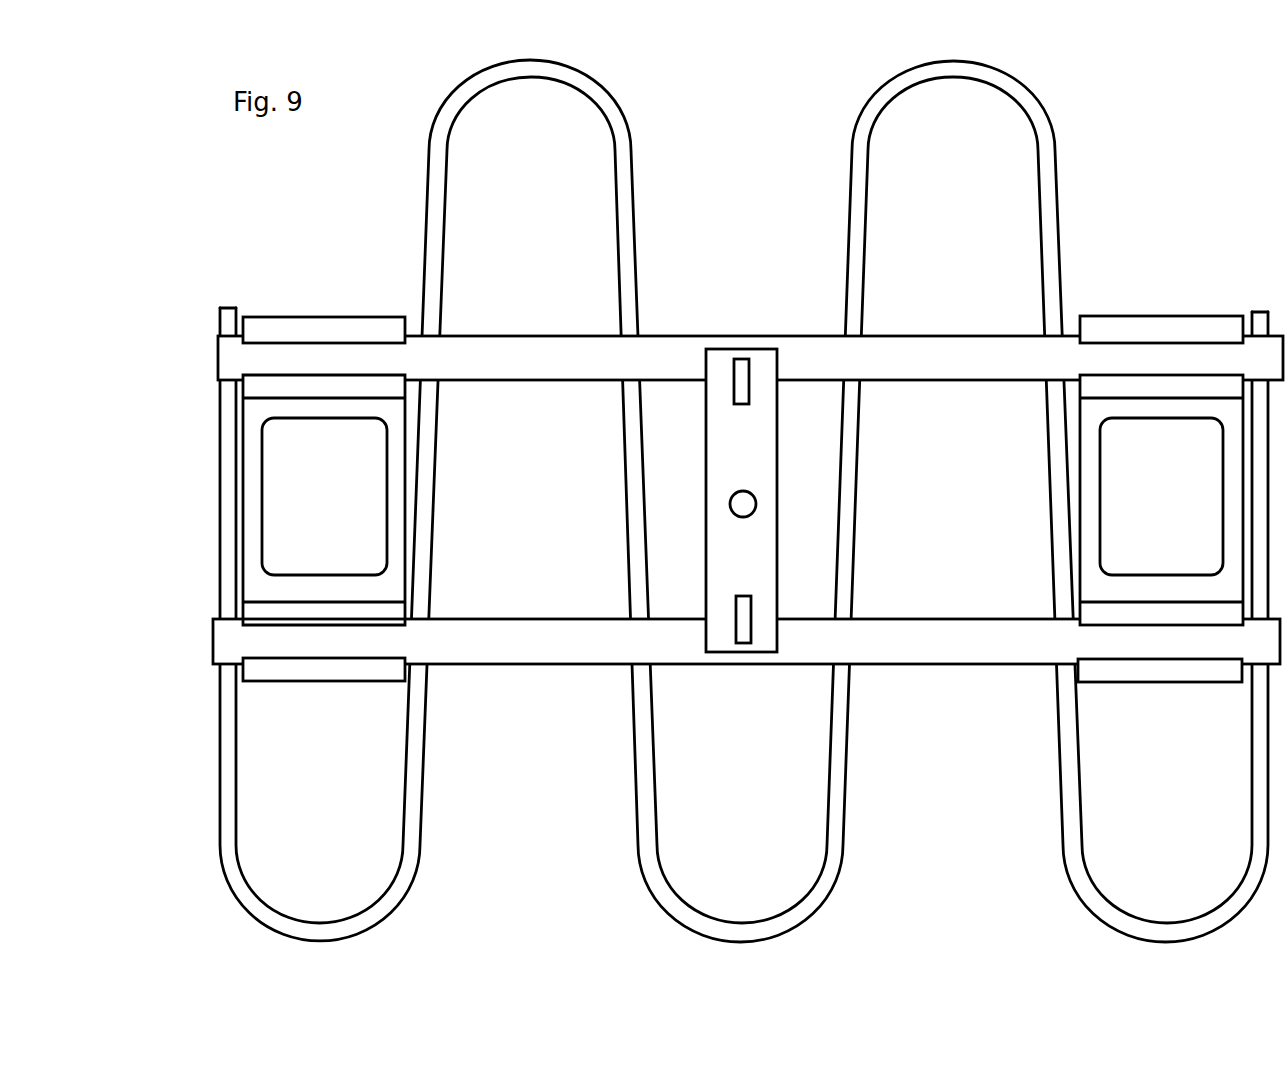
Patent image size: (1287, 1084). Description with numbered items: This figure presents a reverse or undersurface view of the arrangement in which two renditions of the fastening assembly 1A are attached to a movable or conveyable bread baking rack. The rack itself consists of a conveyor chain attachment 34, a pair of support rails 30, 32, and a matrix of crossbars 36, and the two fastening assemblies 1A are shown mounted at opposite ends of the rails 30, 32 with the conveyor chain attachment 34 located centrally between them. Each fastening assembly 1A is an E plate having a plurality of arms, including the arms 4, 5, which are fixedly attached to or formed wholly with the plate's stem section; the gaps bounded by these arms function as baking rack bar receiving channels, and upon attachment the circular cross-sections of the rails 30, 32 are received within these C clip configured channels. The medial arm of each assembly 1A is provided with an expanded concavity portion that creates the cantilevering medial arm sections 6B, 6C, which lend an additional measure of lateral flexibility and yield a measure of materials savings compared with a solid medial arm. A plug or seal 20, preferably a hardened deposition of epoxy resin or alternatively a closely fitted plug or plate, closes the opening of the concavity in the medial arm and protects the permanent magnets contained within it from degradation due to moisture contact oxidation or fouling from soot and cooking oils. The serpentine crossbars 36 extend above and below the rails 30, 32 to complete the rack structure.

The fastening assembly 1A is at (306, 300).
The arm 4 is at (281, 330).
The arm 5 is at (278, 672).
The medial arm section 6B is at (265, 386).
The medial arm section 6C is at (272, 612).
The plug or seal 20 is at (294, 540).
The support rail 30 is at (492, 365).
The support rail 32 is at (999, 650).
The conveyor chain attachment 34 is at (719, 473).
The crossbars 36 is at (582, 85).